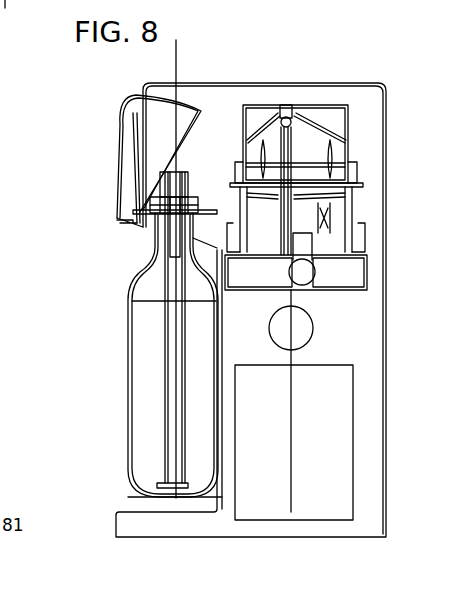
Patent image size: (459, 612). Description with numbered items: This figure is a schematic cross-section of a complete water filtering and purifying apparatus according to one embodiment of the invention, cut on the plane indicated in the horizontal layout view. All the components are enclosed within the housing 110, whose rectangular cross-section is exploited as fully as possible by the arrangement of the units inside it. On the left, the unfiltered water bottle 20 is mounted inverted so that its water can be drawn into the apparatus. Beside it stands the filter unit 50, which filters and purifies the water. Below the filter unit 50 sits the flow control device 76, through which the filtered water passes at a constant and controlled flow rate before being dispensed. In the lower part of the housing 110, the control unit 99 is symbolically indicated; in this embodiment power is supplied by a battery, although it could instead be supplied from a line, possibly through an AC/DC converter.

The housing 110 is at (388, 243).
The unfiltered water bottle 20 is at (148, 404).
The filter unit 50 is at (358, 143).
The flow control device 76 is at (291, 326).
The control unit 99 is at (335, 448).